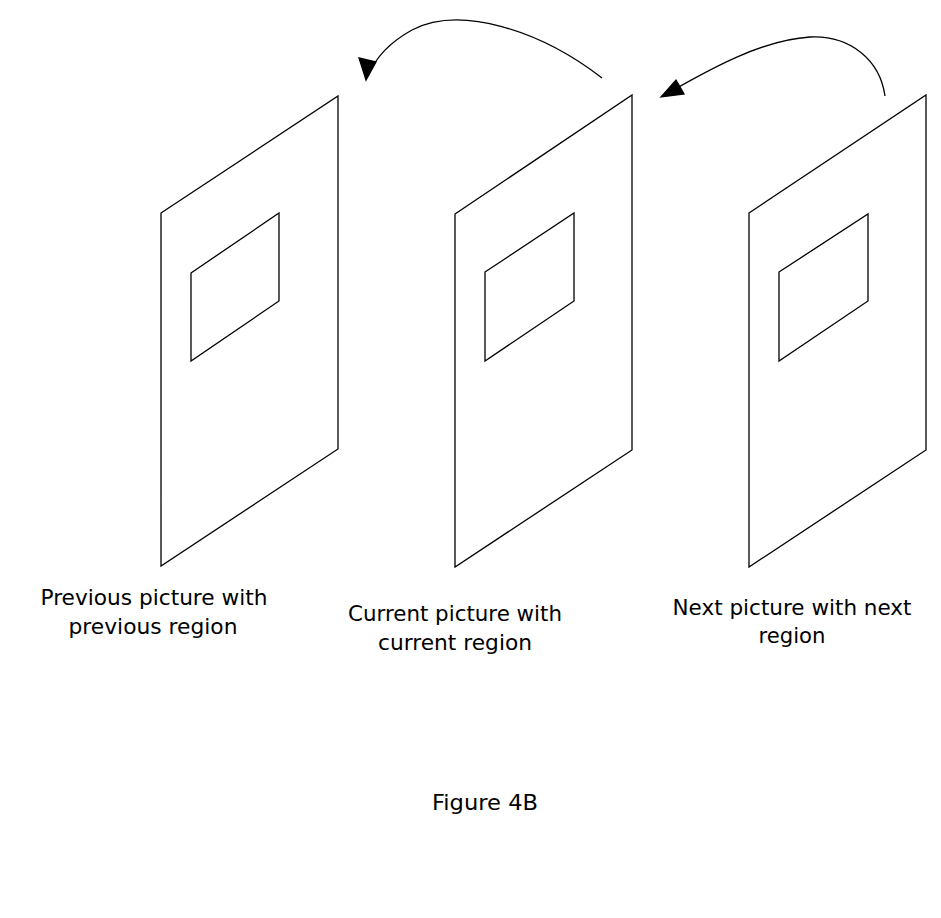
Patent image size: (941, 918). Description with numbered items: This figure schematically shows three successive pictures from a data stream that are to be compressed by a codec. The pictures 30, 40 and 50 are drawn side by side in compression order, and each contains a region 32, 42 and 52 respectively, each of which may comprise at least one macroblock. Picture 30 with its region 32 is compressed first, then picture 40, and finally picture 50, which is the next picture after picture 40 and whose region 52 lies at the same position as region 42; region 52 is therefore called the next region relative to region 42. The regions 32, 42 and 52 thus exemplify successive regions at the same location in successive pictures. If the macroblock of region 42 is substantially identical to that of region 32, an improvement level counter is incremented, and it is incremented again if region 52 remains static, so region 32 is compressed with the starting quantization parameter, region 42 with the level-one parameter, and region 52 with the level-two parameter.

The picture 30 is at (197, 187).
The region 32 is at (191, 328).
The picture 40 is at (482, 193).
The region 42 is at (485, 330).
The picture 50 is at (787, 183).
The region 52 is at (778, 308).